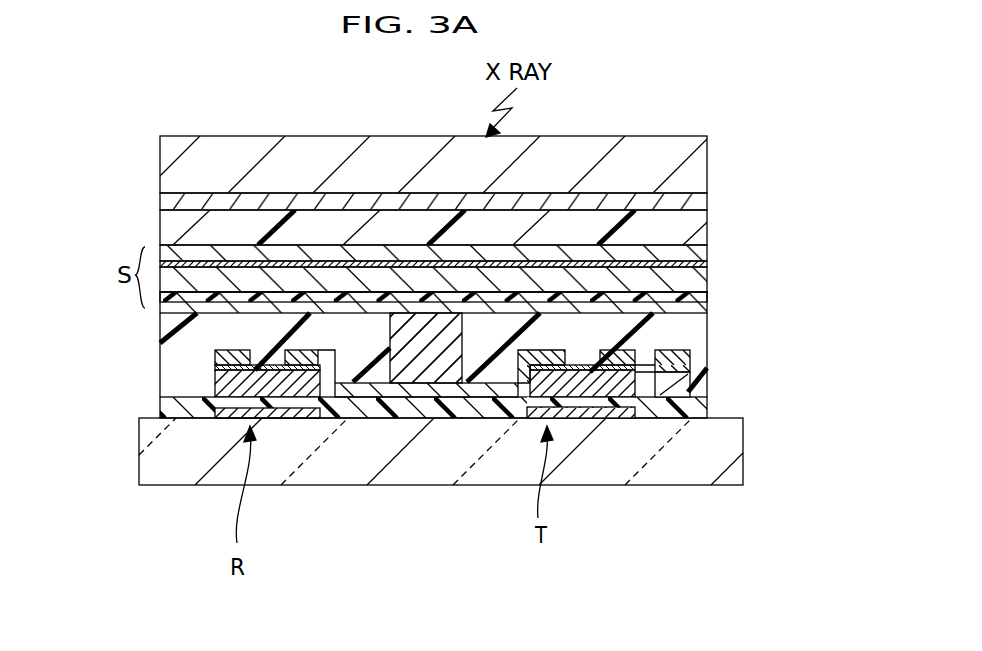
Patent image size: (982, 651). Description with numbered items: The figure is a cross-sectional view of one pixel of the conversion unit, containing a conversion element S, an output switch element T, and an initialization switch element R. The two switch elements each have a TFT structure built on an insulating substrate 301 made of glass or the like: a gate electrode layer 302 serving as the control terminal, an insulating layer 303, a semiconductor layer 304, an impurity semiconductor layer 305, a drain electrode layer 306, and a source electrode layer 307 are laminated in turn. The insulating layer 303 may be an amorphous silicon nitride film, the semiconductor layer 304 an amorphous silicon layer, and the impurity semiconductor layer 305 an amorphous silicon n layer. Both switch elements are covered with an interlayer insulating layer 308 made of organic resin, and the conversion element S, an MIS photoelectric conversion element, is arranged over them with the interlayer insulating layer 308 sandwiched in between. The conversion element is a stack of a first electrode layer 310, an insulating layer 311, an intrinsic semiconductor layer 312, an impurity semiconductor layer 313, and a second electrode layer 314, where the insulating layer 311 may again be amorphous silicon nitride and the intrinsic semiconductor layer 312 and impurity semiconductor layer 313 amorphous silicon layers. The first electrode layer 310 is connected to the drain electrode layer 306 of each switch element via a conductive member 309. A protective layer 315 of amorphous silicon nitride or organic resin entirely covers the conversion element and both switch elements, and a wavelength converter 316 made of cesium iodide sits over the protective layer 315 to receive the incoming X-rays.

The insulating substrate 301 is at (720, 457).
The gate electrode layer 302 is at (295, 413).
The insulating layer 303 is at (700, 407).
The semiconductor layer 304 is at (213, 413).
The impurity semiconductor layer 305 is at (215, 380).
The drain electrode layer 306 is at (273, 342).
The source electrode layer 307 is at (215, 352).
The interlayer insulating layer 308 is at (170, 330).
The conductive member 309 is at (418, 377).
The first electrode layer 310 is at (692, 305).
The insulating layer 311 is at (692, 295).
The intrinsic semiconductor layer 312 is at (692, 277).
The impurity semiconductor layer 313 is at (692, 262).
The second electrode layer 314 is at (690, 248).
The protective layer 315 is at (688, 232).
The wavelength converter 316 is at (692, 172).